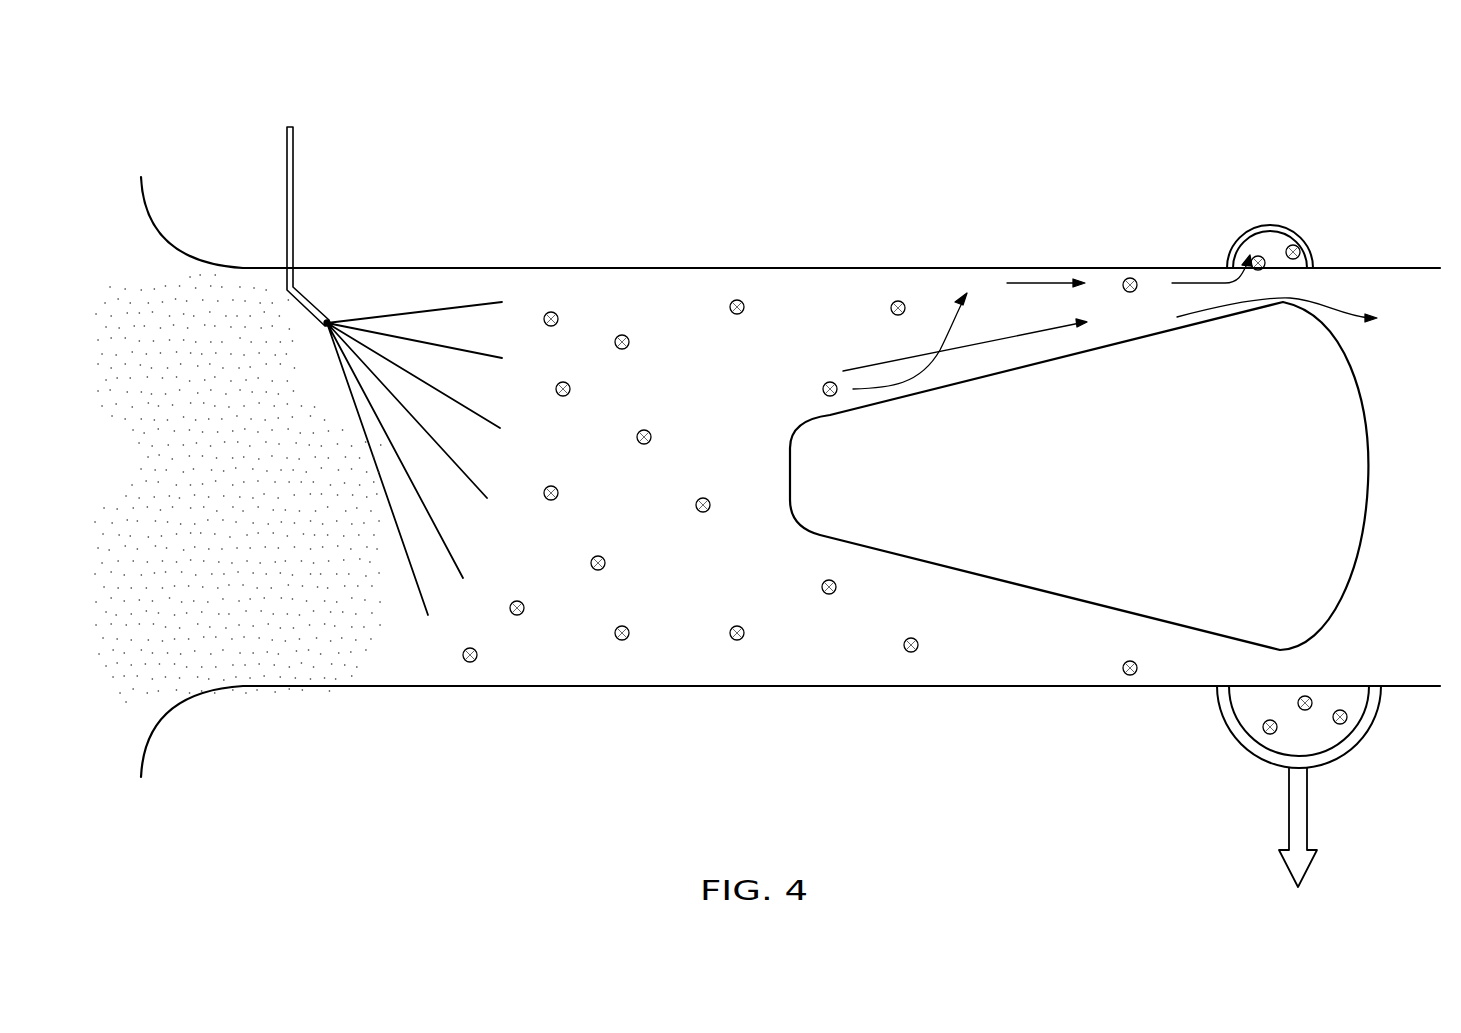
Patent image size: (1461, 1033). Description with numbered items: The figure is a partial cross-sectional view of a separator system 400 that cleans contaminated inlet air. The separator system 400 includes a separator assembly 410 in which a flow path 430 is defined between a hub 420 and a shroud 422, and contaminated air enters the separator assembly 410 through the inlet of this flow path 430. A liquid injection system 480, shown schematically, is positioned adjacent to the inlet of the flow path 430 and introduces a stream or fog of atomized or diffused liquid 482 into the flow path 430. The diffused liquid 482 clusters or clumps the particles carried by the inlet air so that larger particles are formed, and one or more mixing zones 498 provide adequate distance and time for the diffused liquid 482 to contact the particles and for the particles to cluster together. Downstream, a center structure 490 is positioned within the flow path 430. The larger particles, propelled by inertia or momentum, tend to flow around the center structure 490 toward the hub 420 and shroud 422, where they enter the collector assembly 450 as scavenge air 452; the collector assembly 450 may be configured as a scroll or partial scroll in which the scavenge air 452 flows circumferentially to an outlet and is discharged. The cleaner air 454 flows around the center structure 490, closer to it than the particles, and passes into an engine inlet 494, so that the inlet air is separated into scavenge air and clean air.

The separator system 400 is at (1338, 117).
The separator assembly 410 is at (575, 268).
The hub 420 is at (757, 688).
The shroud 422 is at (790, 268).
The flow path 430 is at (352, 451).
The collector assembly 450 is at (1275, 225).
The scavenge air 452 is at (957, 319).
The cleaner air 454 is at (865, 363).
The liquid injection system 480 is at (293, 208).
The diffused liquid 482 is at (465, 304).
The center structure 490 is at (1138, 339).
The engine inlet 494 is at (1443, 391).
The mixing zone 498 is at (682, 283).